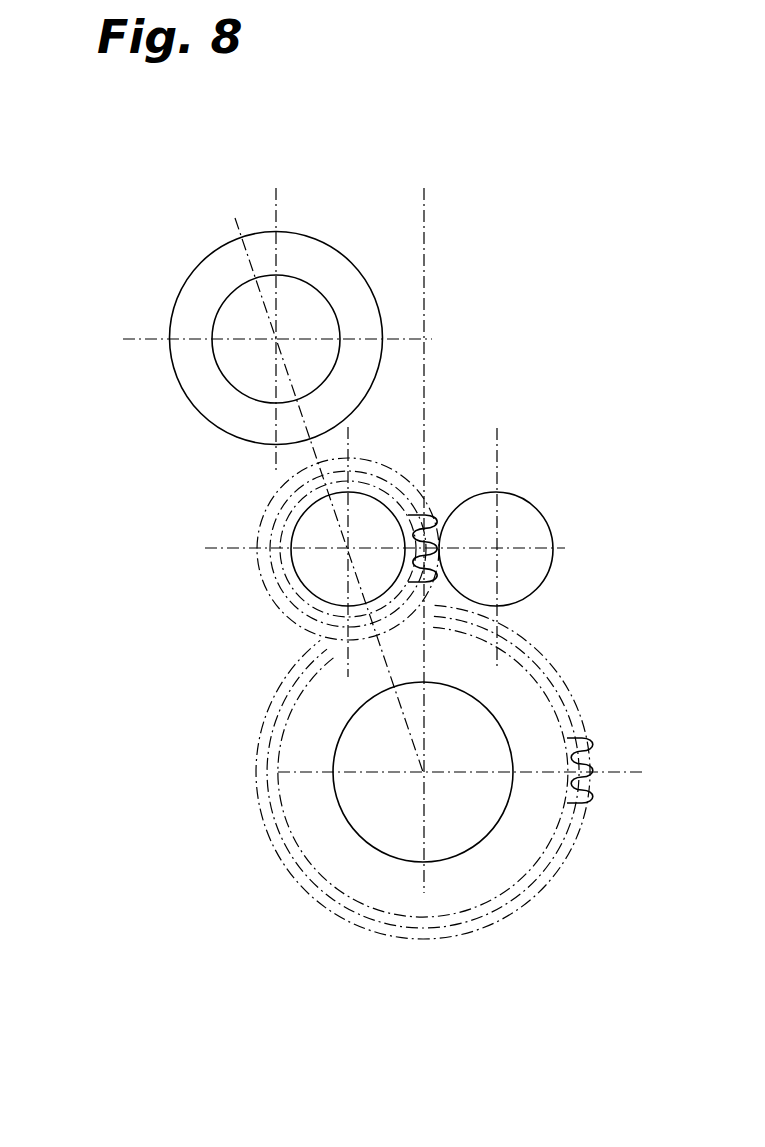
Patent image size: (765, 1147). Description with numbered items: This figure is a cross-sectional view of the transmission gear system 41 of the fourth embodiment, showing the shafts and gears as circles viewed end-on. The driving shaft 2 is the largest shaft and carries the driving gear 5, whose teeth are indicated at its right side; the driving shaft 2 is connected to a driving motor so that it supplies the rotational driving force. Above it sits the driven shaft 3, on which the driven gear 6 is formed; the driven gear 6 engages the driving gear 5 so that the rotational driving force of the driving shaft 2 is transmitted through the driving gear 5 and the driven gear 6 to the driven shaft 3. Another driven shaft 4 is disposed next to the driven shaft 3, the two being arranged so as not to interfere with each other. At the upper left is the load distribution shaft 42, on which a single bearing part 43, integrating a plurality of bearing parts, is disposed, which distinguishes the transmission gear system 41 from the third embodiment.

The transmission gear system 41 is at (478, 198).
The bearing part 43 is at (315, 238).
The load distribution shaft 42 is at (337, 313).
The driven shaft 3 is at (300, 582).
The driven shaft 4 is at (543, 580).
The driven gear 6 is at (425, 517).
The driving shaft 2 is at (340, 813).
The driving gear 5 is at (583, 806).